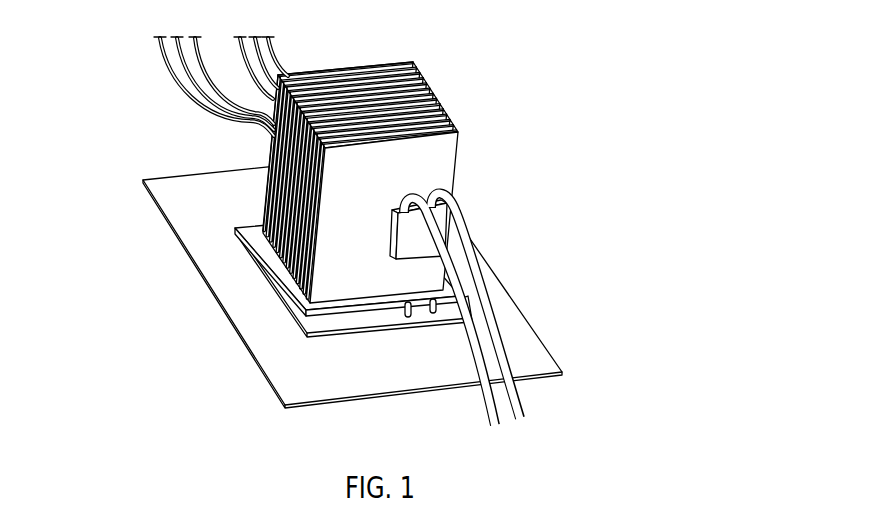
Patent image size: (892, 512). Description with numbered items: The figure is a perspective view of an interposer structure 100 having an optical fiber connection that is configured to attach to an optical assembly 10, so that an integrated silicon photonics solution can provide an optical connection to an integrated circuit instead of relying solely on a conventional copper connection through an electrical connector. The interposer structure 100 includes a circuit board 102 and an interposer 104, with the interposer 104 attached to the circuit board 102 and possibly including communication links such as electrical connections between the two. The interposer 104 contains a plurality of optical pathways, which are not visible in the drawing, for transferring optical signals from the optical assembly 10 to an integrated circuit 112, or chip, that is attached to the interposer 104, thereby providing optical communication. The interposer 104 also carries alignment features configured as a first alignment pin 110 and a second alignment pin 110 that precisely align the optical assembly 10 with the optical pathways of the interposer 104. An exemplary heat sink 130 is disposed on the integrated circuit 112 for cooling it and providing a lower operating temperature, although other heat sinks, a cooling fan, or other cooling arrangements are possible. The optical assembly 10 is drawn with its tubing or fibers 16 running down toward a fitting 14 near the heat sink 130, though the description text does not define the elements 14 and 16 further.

The interposer structure 100 is at (314, 232).
The circuit board 102 is at (543, 356).
The interposer 104 is at (307, 329).
The alignment pin 110 is at (433, 314).
The integrated circuit 112 is at (298, 301).
The heat sink 130 is at (456, 148).
The heat sink body 14 is at (383, 227).
The optical assembly 10 is at (487, 297).
The coolant tubes 16 is at (448, 289).